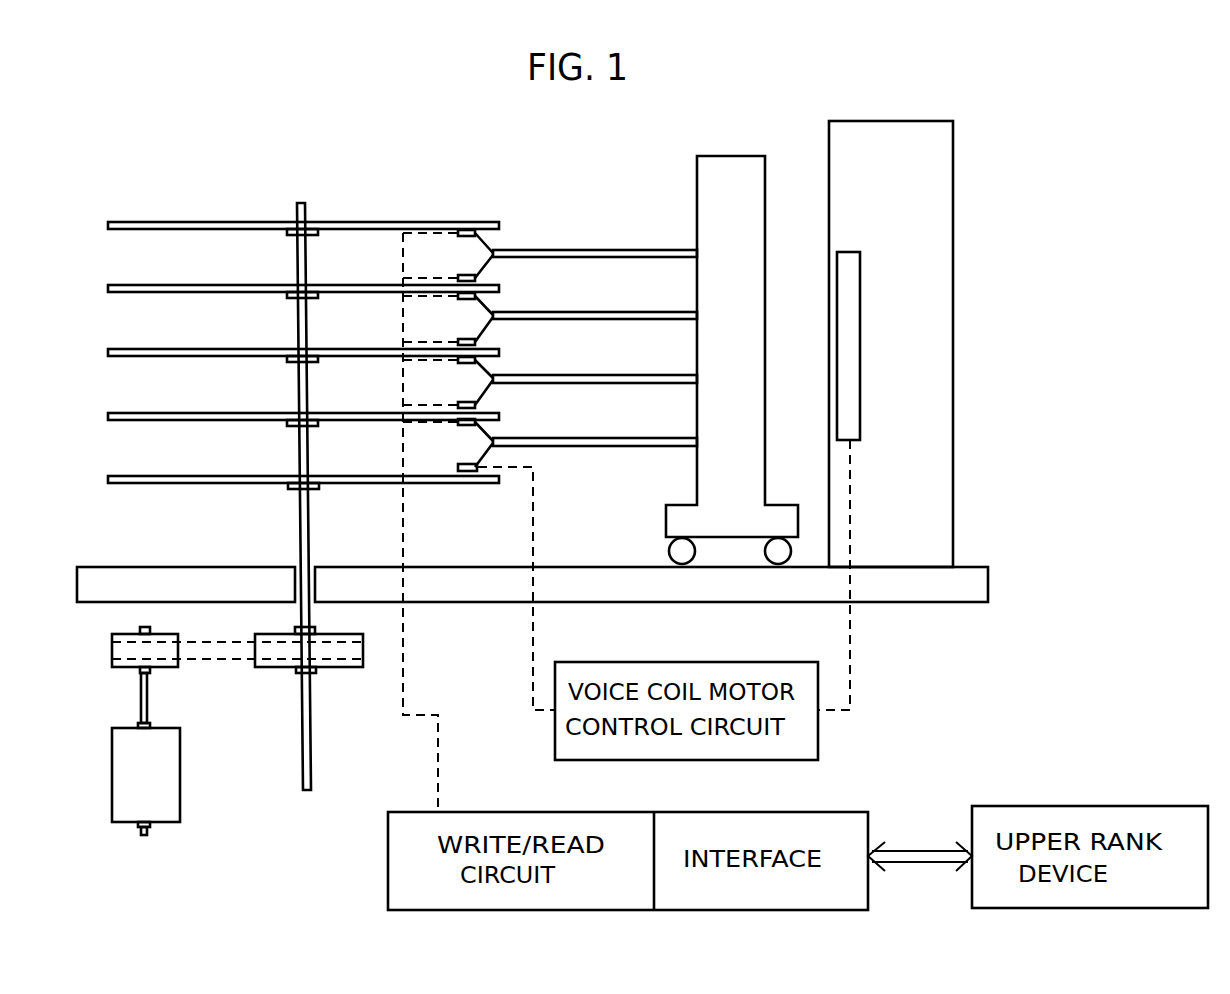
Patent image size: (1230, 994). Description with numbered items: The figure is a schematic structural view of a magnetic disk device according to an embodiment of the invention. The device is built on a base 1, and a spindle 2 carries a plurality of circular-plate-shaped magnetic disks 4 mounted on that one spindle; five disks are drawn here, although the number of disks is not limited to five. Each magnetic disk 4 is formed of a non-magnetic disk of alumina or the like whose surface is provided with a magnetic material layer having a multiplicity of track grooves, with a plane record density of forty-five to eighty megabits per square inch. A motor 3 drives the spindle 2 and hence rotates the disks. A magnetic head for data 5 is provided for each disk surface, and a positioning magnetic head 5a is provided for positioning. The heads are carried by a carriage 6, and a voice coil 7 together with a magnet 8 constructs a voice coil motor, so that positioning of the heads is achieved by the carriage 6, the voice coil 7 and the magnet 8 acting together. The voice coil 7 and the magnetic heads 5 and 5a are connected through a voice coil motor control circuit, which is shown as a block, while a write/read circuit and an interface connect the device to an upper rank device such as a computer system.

The base 1 is at (470, 583).
The spindle 2 is at (298, 521).
The motor 3 is at (181, 775).
The magnetic disk 4 is at (363, 222).
The magnetic head for data 5 is at (478, 342).
The positioning magnetic head 5a is at (468, 474).
The carriage 6 is at (733, 160).
The voice coil 7 is at (852, 352).
The magnet 8 is at (906, 143).